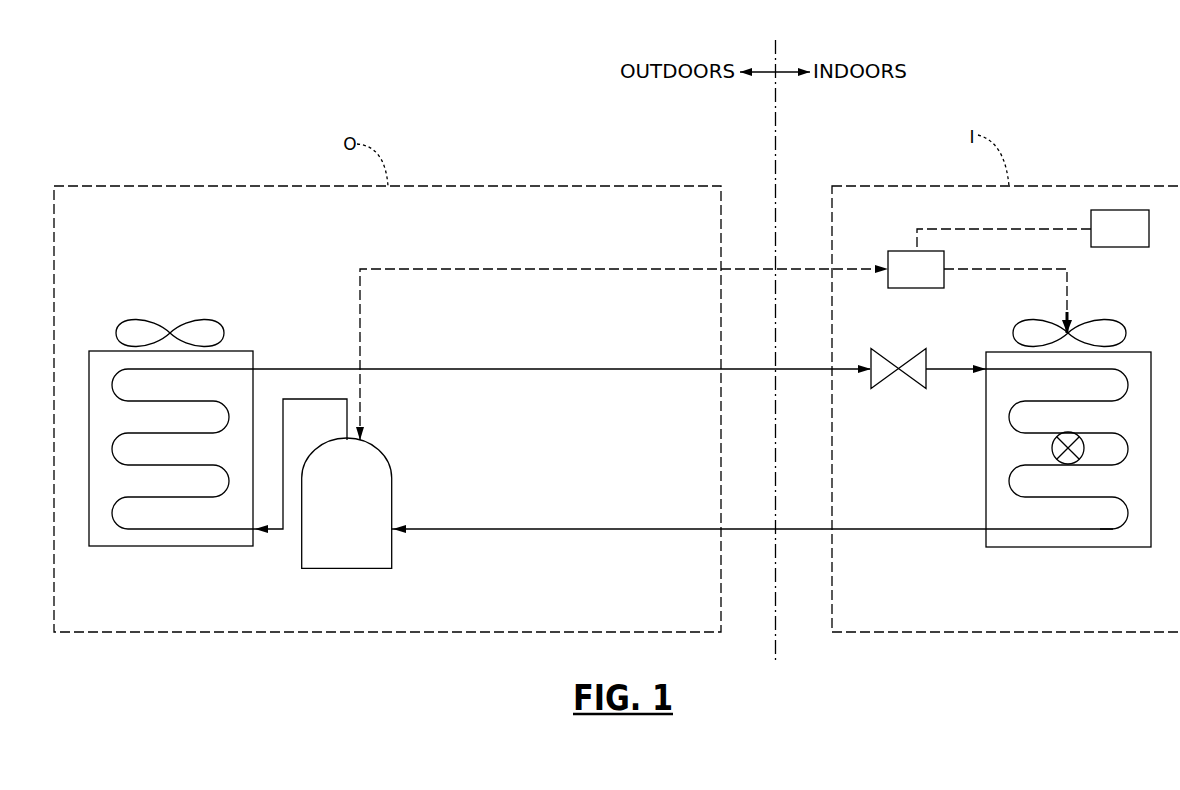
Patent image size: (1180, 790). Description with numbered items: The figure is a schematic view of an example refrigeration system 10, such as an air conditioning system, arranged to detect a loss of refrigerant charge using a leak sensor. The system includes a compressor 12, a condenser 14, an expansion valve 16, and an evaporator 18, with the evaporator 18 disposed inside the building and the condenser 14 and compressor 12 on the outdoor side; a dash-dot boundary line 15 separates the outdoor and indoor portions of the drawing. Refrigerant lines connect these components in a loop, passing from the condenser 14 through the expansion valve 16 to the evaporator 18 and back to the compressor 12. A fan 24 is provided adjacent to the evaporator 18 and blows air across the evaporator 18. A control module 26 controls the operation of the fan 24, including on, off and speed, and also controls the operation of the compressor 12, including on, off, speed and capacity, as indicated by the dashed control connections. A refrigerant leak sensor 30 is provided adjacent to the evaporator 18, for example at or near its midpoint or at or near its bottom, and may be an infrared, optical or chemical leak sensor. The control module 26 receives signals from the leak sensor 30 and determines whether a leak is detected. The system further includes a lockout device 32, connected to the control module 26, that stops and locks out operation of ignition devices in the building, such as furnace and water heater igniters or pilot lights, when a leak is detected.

The refrigeration system 10 is at (500, 95).
The compressor 12 is at (357, 513).
The condenser 14 is at (171, 546).
The wall / indoor-outdoor boundary 15 is at (776, 52).
The expansion valve 16 is at (913, 378).
The evaporator 18 is at (986, 418).
The fan 24 is at (1108, 321).
The control module 26 is at (906, 281).
The refrigerant leak sensor 30 is at (1052, 448).
The lockout device 32 is at (1110, 240).